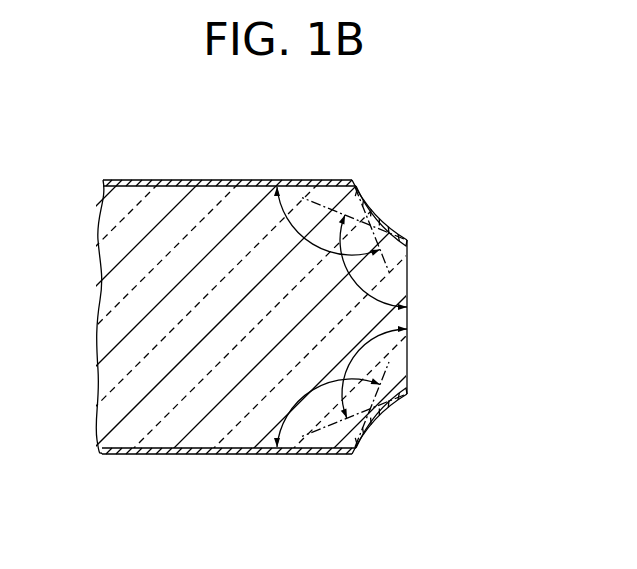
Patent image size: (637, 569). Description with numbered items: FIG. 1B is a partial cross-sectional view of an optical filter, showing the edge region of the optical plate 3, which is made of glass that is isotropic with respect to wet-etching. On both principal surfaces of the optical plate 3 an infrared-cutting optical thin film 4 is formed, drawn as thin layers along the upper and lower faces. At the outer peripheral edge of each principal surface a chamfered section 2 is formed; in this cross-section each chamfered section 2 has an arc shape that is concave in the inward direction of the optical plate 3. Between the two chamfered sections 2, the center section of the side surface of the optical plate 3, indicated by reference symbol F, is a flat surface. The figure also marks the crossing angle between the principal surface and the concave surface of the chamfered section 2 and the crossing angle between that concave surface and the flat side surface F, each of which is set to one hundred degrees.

The chamfered section 2 is at (380, 206).
The optical plate 3 is at (216, 392).
The infrared-cutting optical thin film 4 is at (222, 180).
The flat surface of the side surface F is at (412, 318).